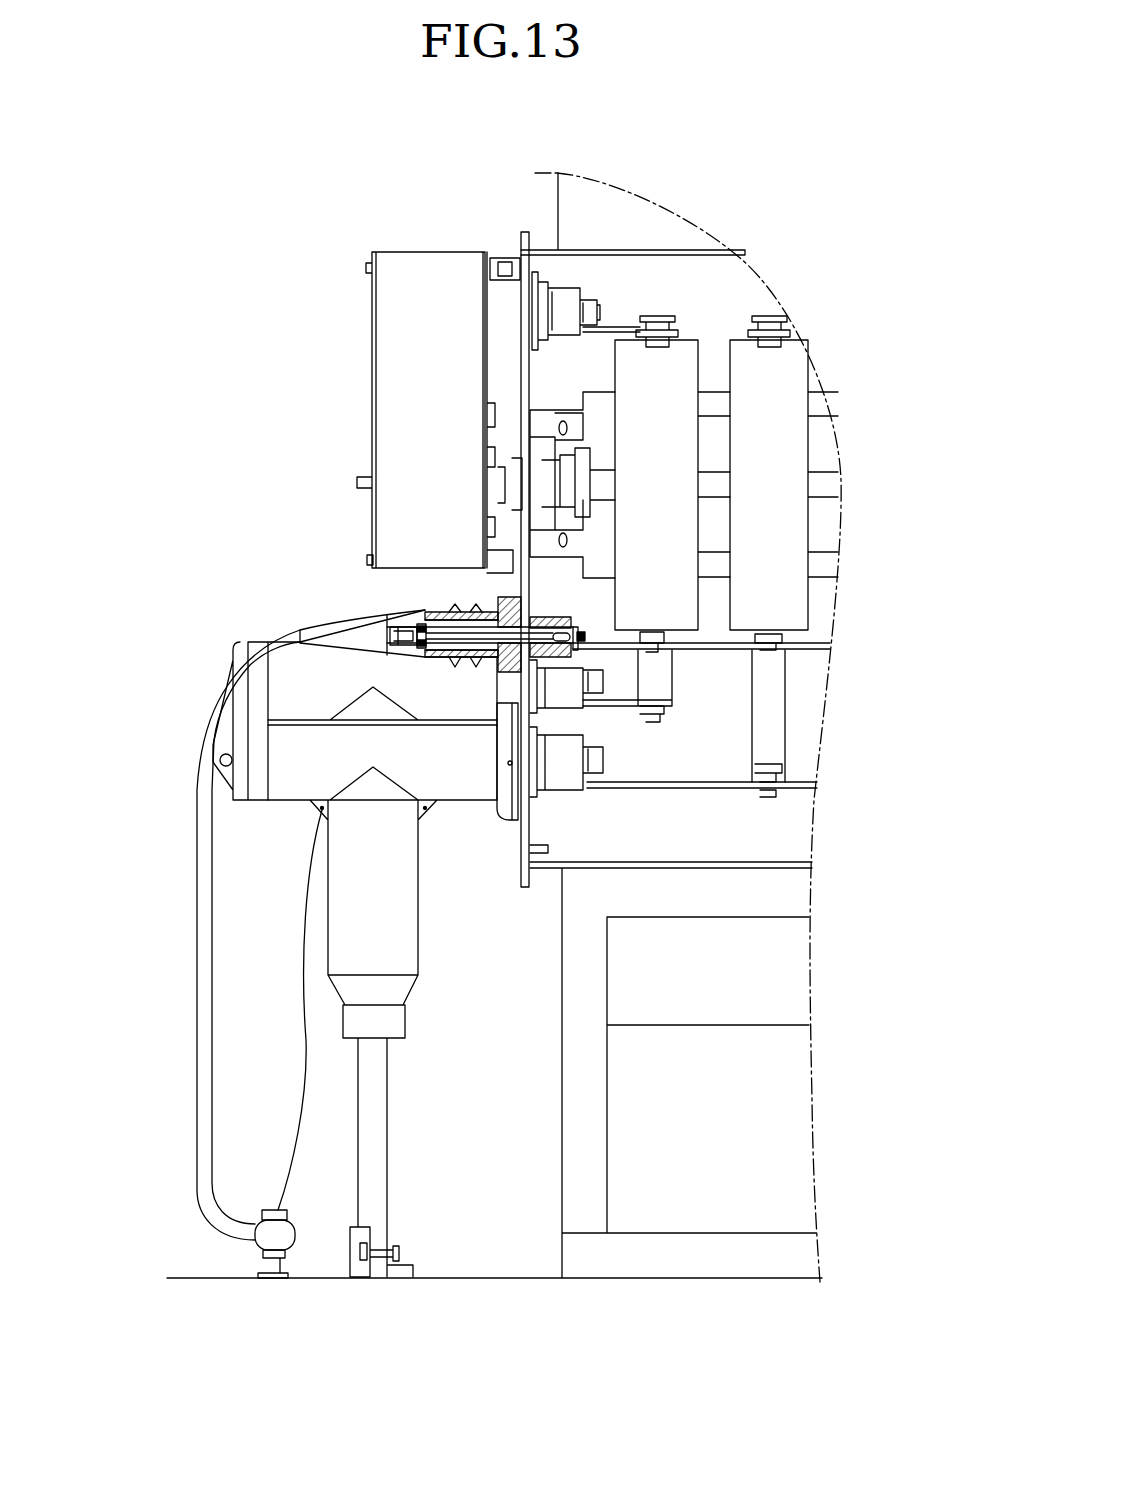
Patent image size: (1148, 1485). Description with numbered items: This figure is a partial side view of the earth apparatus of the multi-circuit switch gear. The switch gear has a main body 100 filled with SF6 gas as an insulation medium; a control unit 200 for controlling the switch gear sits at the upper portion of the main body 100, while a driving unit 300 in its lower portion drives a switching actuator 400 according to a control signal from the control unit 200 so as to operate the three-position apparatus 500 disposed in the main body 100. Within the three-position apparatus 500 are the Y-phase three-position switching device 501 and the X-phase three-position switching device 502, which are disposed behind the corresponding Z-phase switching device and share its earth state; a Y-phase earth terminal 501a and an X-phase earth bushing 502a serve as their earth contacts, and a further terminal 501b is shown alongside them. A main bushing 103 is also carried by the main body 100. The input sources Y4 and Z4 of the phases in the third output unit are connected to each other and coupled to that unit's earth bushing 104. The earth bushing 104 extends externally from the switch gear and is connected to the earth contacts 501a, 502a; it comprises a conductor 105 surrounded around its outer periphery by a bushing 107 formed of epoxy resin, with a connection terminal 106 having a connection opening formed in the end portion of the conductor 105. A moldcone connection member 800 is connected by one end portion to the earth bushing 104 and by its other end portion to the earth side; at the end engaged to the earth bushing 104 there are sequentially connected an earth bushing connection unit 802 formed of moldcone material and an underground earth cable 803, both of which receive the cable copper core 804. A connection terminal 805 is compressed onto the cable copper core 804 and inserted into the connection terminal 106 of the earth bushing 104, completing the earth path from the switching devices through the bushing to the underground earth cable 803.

The main body 100 is at (852, 568).
The control unit 200 is at (660, 212).
The driving unit 300 is at (778, 1112).
The switching actuator 400 is at (413, 262).
The 3-position apparatus 500 is at (714, 297).
The Y-phase 3-position switching device 501 is at (675, 370).
The Y-phase earth terminal 501a is at (673, 663).
The first cylinder lower mounting bolt 501b is at (660, 723).
The X-phase 3-position switching device 502 is at (776, 447).
The X-phase earth bushing 502a is at (780, 657).
The main bushing 103 is at (503, 818).
The earth bushing 104 is at (489, 593).
The conductor 105 is at (466, 616).
The connection terminal 106 is at (447, 613).
The bushing 107 is at (480, 607).
The moldcone connection member 800 is at (344, 850).
The earth bushing connection unit 802 is at (327, 624).
The underground earth cable 803 is at (200, 714).
The cable copper core 804 is at (398, 630).
The connection terminal 805 is at (421, 622).
The Y-phase input source Y4 is at (297, 680).
The Z-phase input source Z4 is at (293, 770).